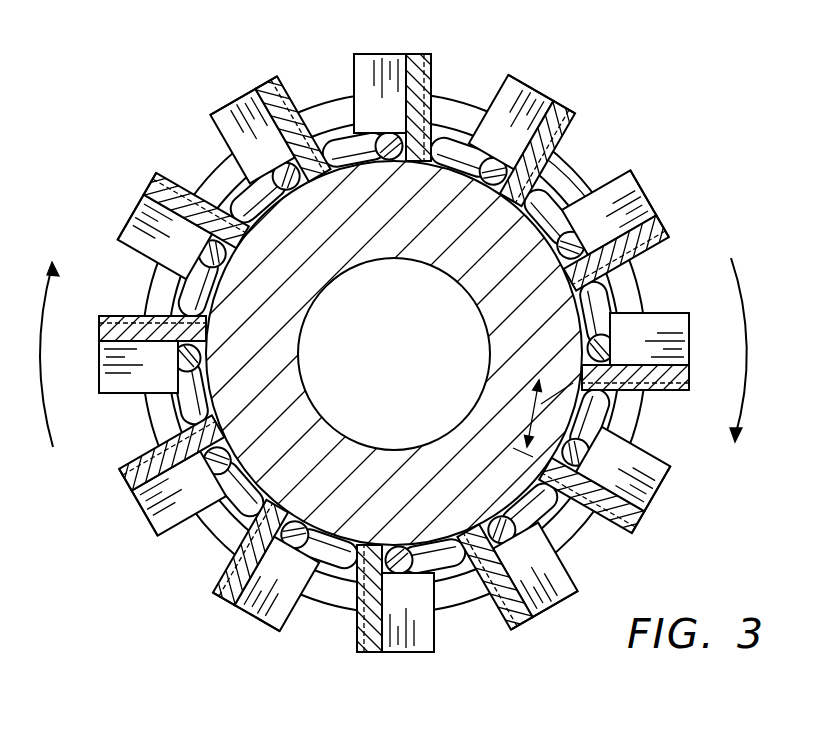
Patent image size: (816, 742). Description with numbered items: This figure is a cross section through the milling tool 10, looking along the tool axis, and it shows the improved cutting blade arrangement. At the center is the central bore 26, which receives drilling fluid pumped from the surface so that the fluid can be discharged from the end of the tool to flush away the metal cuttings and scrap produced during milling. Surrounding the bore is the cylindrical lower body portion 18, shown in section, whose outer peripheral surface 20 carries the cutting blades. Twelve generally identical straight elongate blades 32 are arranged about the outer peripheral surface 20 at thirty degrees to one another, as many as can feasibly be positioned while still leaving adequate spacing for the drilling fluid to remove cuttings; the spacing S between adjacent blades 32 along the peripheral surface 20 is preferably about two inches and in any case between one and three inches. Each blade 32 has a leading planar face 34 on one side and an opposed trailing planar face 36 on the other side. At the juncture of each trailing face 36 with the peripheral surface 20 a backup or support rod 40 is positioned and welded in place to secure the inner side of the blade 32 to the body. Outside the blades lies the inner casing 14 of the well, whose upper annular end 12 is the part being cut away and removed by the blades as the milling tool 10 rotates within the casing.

The milling tool 10 is at (408, 347).
The annular end 12 is at (457, 110).
The inner casing 14 is at (328, 100).
The cylindrical lower body portion 18 is at (492, 206).
The outer peripheral surface 20 is at (566, 217).
The central bore 26 is at (302, 341).
The blades 32 is at (384, 78).
The leading planar face 34 is at (432, 73).
The trailing planar face 36 is at (372, 54).
The support rod 40 is at (333, 142).